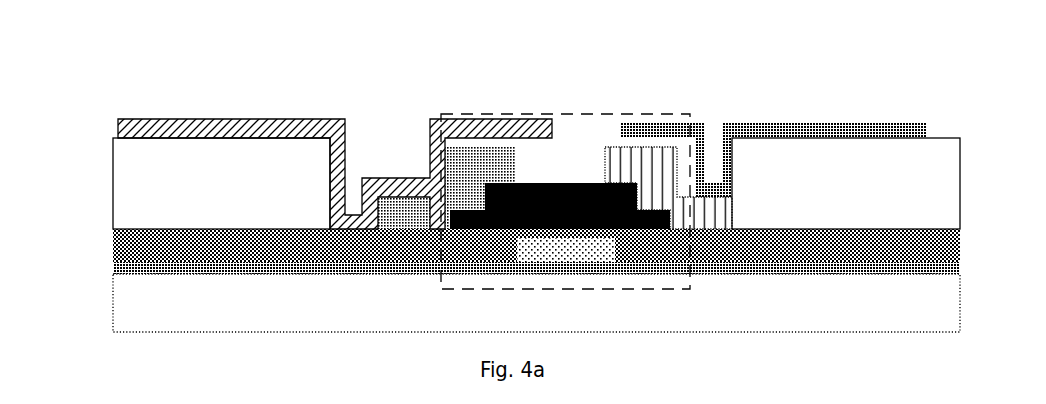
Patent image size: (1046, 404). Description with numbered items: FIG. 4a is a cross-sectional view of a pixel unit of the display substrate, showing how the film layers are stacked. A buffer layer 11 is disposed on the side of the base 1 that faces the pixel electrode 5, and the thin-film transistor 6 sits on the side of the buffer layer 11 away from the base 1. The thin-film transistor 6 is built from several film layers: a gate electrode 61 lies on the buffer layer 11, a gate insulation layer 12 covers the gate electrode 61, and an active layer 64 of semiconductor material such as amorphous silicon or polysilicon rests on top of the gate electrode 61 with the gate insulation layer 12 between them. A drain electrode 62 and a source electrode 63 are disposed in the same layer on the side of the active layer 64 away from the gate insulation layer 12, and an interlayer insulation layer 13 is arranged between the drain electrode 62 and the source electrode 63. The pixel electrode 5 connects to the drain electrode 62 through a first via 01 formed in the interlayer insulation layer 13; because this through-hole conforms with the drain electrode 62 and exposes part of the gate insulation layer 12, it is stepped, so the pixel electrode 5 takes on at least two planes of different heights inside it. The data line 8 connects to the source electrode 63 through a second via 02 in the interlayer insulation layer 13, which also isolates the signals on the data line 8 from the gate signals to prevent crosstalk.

The base 1 is at (147, 311).
The buffer layer 11 is at (115, 268).
The gate insulation layer 12 is at (128, 248).
The interlayer insulation layer 13 is at (113, 187).
The pixel electrode 5 is at (288, 119).
The first via 01 is at (383, 140).
The second via 02 is at (711, 138).
The thin-film transistor 6 is at (646, 113).
The gate electrode 61 is at (566, 250).
The drain electrode 62 is at (480, 188).
The source electrode 63 is at (668, 188).
The active layer 64 is at (570, 183).
The data line 8 is at (797, 122).